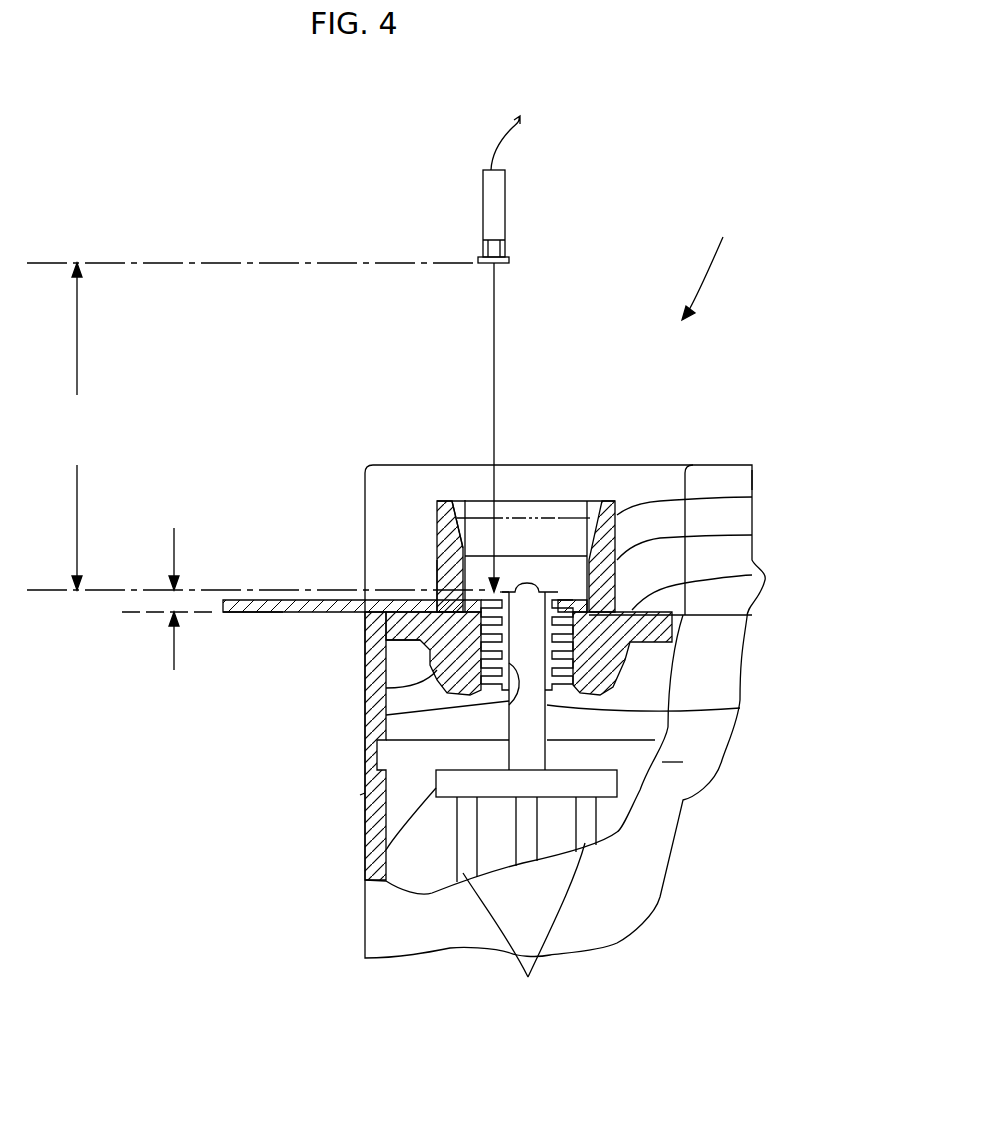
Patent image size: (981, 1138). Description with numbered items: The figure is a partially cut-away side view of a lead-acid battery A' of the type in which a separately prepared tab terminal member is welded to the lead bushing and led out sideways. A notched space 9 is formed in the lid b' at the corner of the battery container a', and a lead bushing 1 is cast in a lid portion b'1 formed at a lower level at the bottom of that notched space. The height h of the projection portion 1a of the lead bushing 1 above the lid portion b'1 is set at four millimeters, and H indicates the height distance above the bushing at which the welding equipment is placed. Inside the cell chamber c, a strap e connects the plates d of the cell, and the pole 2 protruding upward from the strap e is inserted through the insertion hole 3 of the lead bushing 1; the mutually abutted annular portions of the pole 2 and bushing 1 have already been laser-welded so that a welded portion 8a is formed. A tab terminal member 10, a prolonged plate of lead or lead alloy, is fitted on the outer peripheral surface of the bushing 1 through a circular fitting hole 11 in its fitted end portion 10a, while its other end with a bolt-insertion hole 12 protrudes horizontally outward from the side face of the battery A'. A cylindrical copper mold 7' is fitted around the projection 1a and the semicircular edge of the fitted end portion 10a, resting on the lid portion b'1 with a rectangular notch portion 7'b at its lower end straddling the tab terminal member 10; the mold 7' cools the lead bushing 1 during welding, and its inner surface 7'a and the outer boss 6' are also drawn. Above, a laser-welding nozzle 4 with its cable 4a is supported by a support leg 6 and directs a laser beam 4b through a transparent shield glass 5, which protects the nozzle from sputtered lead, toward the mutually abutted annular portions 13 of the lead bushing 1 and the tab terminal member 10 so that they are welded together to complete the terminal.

The lead bushing 1 is at (752, 576).
The projection portion 1a is at (752, 497).
The pole 2 is at (740, 708).
The insertion hole 3 is at (386, 715).
The laser-welding nozzle 4 is at (505, 180).
The sensor cable 4a is at (518, 132).
The laser beam 4b is at (498, 313).
The shield glass 5 is at (588, 515).
The support leg 6 is at (537, 236).
The boss 6' is at (630, 498).
The cylindrical mold 7' is at (476, 501).
The sleeve upper portion 7'a is at (435, 459).
The rectangular notch portion 7'b is at (354, 556).
The welded portion 8a is at (548, 590).
The notched space 9 is at (665, 487).
The tab terminal member 10 is at (338, 600).
The fitted end portion 10a is at (752, 535).
The circular fitting hole 11 is at (386, 688).
The bolt-insertion hole 12 is at (283, 613).
The mutually abutted annular portions 13 is at (500, 598).
The lead-acid battery A' is at (714, 264).
The height H is at (256, 426).
The height of the projection portion h is at (169, 599).
The battery container a' is at (316, 814).
The lid b' is at (772, 434).
The lid portion b'1 is at (362, 655).
The cell chamber c is at (654, 691).
The positive plates d is at (524, 926).
The strap e is at (375, 850).